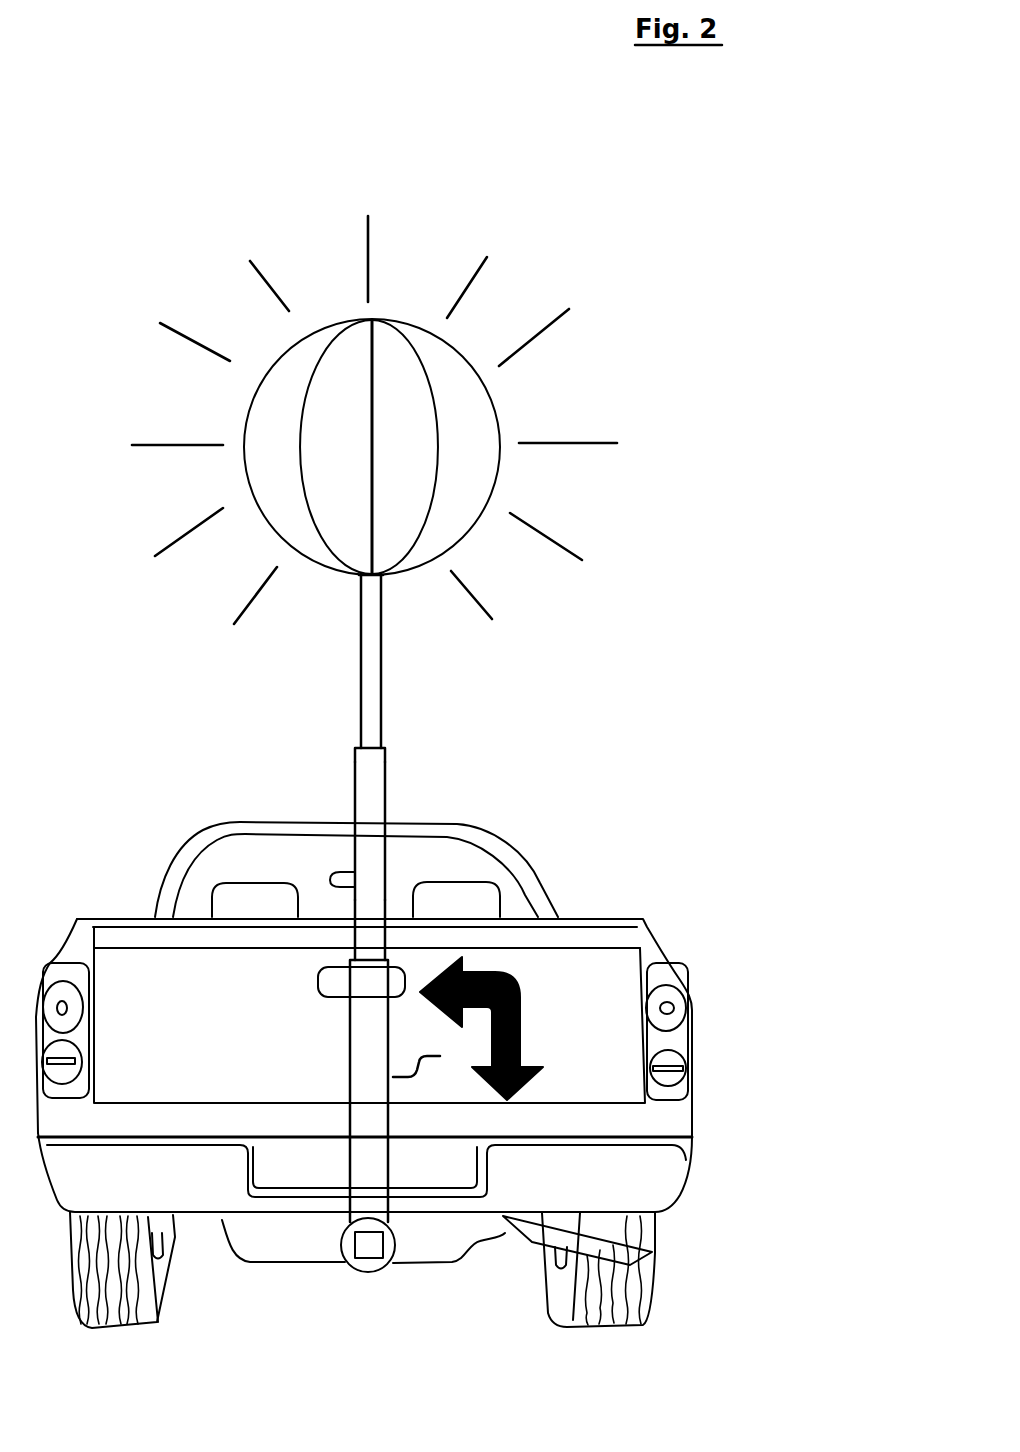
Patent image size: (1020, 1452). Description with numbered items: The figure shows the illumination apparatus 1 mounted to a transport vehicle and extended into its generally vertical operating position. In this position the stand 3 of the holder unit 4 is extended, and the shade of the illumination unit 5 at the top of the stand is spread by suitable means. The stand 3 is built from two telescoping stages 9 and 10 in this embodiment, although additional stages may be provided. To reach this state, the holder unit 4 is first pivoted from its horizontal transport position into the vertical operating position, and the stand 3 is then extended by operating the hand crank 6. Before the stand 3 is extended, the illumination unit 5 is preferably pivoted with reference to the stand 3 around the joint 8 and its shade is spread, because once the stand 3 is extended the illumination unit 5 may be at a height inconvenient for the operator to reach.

The illumination apparatus 1 is at (397, 752).
The stand 3 is at (368, 852).
The holder unit 4 is at (368, 947).
The illumination unit 5 is at (500, 412).
The hand crank 6 is at (402, 1077).
The joint 8 is at (381, 576).
The telescoping stage 9 is at (370, 907).
The telescoping stage 10 is at (372, 733).